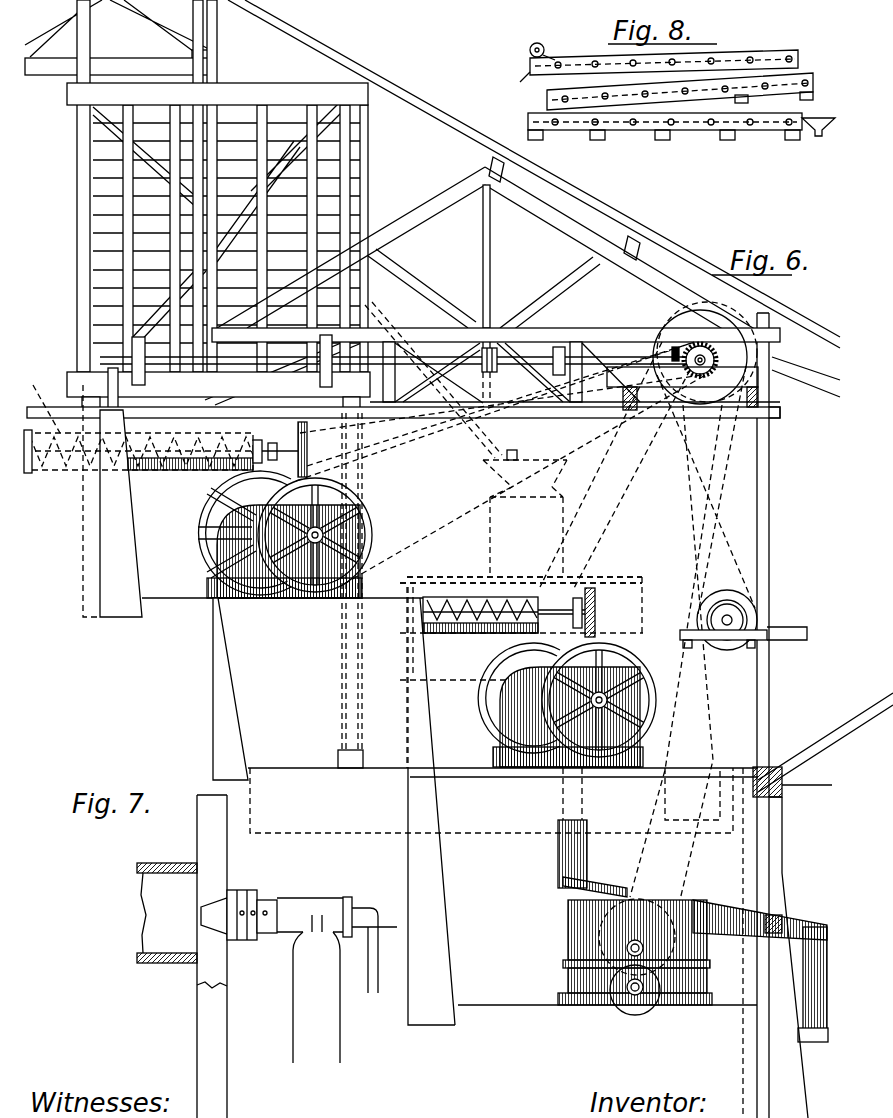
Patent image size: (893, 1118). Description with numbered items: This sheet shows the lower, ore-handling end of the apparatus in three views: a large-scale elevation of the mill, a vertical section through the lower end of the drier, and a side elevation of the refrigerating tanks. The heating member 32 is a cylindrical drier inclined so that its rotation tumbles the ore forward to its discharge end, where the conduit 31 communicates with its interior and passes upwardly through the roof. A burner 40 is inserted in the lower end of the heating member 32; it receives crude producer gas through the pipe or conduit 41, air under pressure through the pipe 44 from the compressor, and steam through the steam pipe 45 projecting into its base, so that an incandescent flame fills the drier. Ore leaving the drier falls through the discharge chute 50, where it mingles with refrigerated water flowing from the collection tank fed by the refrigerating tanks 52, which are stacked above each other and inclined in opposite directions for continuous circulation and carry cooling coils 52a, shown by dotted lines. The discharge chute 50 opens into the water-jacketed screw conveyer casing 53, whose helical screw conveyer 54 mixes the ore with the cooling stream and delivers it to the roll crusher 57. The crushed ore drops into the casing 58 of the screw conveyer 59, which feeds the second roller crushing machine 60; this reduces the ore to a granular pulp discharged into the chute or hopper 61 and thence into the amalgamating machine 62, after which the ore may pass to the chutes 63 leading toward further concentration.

In FIG. 7, the conduit 31 is at (200, 836).
In FIG. 7, the heating member 32 is at (146, 864).
In FIG. 7, the burner 40 is at (245, 890).
In FIG. 7, the pipe or conduit 41 is at (305, 1010).
In FIG. 7, the pipe 44 is at (375, 985).
In FIG. 7, the steam pipe 45 is at (378, 907).
In FIG. 6, the discharge chute 50 is at (40, 400).
In FIG. 7, the discharge chute 50 is at (210, 1010).
In FIG. 8, the refrigerating tanks 52 is at (528, 115).
In FIG. 8, the cooling coils 52a is at (805, 45).
In FIG. 6, the screw conveyer casing 53 is at (168, 472).
In FIG. 6, the helical screw conveyer 54 is at (210, 512).
In FIG. 6, the roll crusher 57 is at (203, 566).
In FIG. 6, the casing 58 is at (272, 637).
In FIG. 6, the screw conveyer 59 is at (457, 577).
In FIG. 6, the second roller crushing machine 60 is at (500, 728).
In FIG. 6, the chute or hopper 61 is at (558, 864).
In FIG. 6, the amalgamating machine 62 is at (595, 932).
In FIG. 6, the chutes 63 is at (800, 925).